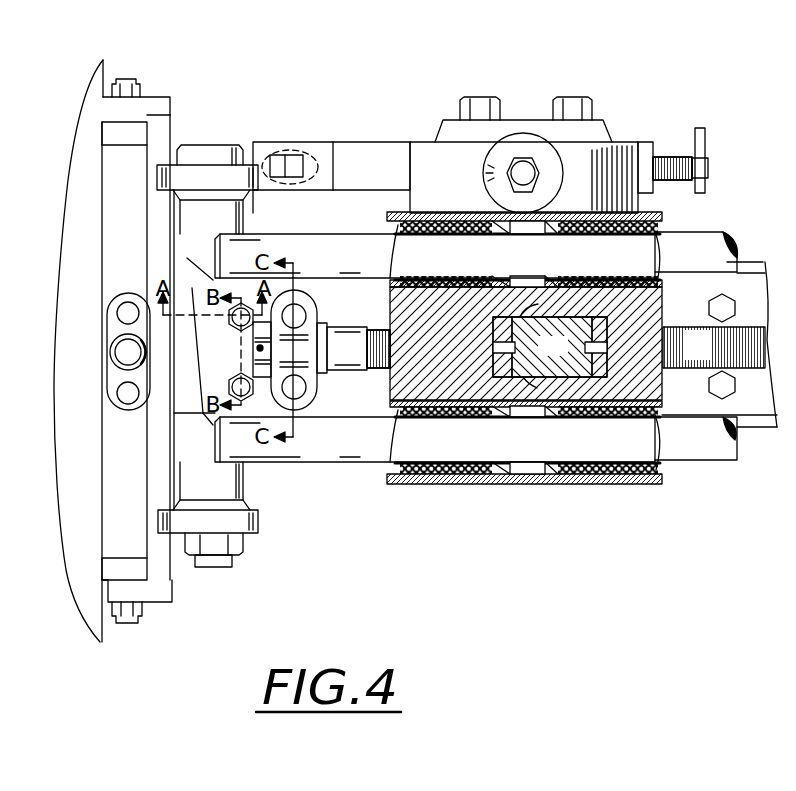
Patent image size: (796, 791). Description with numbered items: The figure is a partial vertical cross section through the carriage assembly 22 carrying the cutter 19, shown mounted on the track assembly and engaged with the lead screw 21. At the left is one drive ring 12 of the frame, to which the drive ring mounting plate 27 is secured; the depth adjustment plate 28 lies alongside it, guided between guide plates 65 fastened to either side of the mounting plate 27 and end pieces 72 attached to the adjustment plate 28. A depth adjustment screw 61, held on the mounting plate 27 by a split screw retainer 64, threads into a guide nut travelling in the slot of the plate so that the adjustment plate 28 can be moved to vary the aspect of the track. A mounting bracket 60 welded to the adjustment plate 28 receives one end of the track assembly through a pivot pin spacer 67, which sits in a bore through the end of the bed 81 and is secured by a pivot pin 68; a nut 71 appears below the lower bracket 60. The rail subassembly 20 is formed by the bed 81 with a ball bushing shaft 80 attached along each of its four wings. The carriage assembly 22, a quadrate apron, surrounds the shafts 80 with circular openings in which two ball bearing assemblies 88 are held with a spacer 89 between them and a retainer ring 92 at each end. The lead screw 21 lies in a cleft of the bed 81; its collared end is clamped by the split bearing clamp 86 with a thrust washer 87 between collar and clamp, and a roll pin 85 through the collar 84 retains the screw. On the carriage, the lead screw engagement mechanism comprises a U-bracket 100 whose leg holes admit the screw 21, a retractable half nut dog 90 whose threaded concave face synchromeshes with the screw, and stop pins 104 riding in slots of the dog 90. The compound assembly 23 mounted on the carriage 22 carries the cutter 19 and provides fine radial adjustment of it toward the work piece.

The drive ring 12 is at (64, 229).
The drive ring mounting plate 27 is at (108, 229).
The depth adjustment plate 28 is at (180, 347).
The guide plate 65 is at (133, 141).
The end piece 72 is at (145, 100).
The pivot pin 68 is at (193, 166).
The mounting bracket 60 is at (195, 190).
The pivot pin spacer 67 is at (195, 224).
The lock nut 71 is at (242, 549).
The compound assembly 23 is at (610, 140).
The cutter 19 is at (285, 167).
The carriage assembly 22 is at (663, 212).
The half nut dog 90 is at (541, 356).
The U-bracket 100 is at (548, 303).
The stop pin 104 is at (548, 390).
The ball bearing 88 is at (422, 230).
The spacer 89 is at (522, 230).
The ball bushing shaft 80 is at (313, 273).
The retainer ring 92 is at (392, 278).
The rail subassembly 20 is at (737, 260).
The bed 81 is at (672, 408).
The lead screw 21 is at (686, 356).
The split bearing clamp 86 is at (296, 337).
The collar 84 is at (265, 375).
The roll pin 85 is at (257, 348).
The thrust washer 87 is at (321, 373).
The screw retainer 64 is at (118, 330).
The depth adjustment screw 61 is at (118, 361).